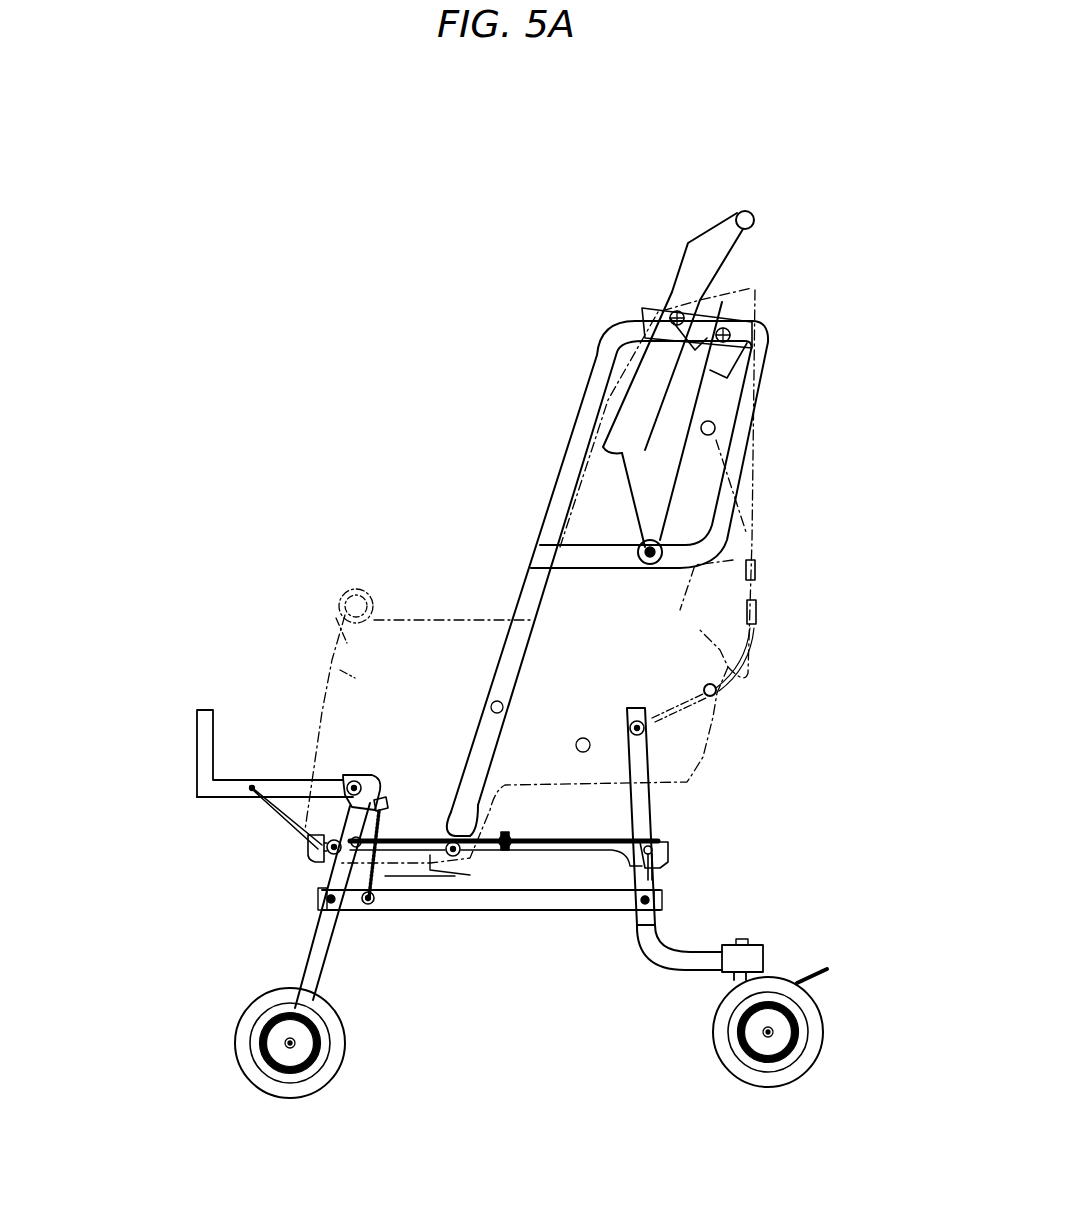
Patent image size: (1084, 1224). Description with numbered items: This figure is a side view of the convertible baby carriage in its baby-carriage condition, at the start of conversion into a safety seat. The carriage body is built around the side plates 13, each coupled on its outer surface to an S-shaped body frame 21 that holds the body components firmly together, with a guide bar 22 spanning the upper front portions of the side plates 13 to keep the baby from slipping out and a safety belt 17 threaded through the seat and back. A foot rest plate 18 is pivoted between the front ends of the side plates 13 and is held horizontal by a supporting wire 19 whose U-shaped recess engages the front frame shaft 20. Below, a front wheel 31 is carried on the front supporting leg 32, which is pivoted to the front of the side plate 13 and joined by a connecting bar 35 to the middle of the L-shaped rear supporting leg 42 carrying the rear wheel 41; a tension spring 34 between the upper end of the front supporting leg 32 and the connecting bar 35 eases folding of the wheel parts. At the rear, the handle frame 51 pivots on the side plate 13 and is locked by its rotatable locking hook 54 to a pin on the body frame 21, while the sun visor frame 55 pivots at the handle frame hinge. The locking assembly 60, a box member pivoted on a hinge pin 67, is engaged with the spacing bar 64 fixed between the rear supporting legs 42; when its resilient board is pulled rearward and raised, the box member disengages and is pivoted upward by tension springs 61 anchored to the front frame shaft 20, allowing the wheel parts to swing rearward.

The side plate 13 is at (353, 677).
The safety belt 17 is at (757, 574).
The foot rest plate 18 is at (207, 763).
The supporting wire 19 is at (277, 817).
The front frame shaft 20 is at (303, 848).
The S-shaped body frame 21 is at (592, 383).
The guide bar 22 is at (350, 588).
The front wheel 31 is at (248, 1053).
The front supporting leg 32 is at (317, 948).
The tension spring 34 is at (372, 906).
The connecting bar 35 is at (548, 898).
The rear wheel 41 is at (817, 1037).
The L-shaped rear supporting leg 42 is at (647, 803).
The handle frame 51 is at (740, 243).
The locking hook 54 is at (730, 307).
The sun visor frame 55 is at (633, 482).
The locking assembly 60 is at (680, 847).
The tension spring 61 is at (413, 878).
The spacing bar 64 is at (665, 867).
The hinge pin 67 is at (460, 868).